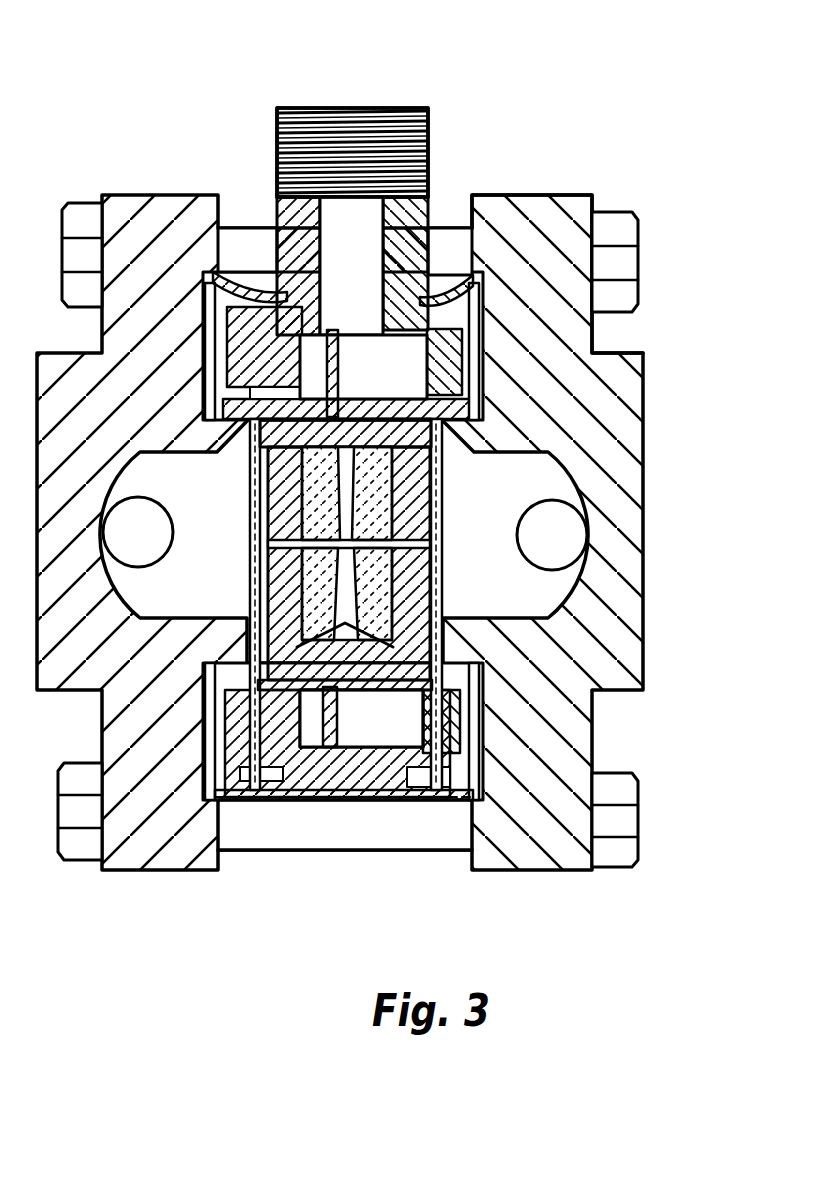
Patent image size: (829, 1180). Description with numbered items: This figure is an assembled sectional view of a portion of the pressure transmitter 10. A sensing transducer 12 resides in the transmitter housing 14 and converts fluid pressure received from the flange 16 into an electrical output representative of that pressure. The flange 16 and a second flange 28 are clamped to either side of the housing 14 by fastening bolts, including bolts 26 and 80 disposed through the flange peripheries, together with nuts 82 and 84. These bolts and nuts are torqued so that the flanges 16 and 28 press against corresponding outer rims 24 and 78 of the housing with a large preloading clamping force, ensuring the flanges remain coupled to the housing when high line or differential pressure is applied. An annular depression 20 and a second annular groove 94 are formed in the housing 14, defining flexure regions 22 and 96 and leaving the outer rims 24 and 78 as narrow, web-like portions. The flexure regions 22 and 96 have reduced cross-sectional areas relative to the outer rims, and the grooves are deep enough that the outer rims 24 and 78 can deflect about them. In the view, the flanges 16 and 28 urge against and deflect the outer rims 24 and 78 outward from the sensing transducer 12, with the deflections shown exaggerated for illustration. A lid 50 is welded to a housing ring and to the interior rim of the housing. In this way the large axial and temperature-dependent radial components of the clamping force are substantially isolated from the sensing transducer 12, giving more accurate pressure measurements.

The pressure transmitter 10 is at (344, 92).
The sensing transducer 12 is at (455, 527).
The transmitter housing 14 is at (297, 230).
The flange 16 is at (110, 197).
The annular depression 20 is at (238, 770).
The flexure region 22 is at (233, 284).
The outer rim 24 is at (232, 282).
The bolt 26 is at (460, 250).
The flange 28 is at (512, 197).
The lid 50 is at (445, 717).
The outer rim 78 is at (457, 253).
The bolt 80 is at (283, 828).
The nut 82 is at (610, 212).
The nut 84 is at (613, 855).
The annular groove 94 is at (440, 772).
The flexure region 96 is at (405, 300).